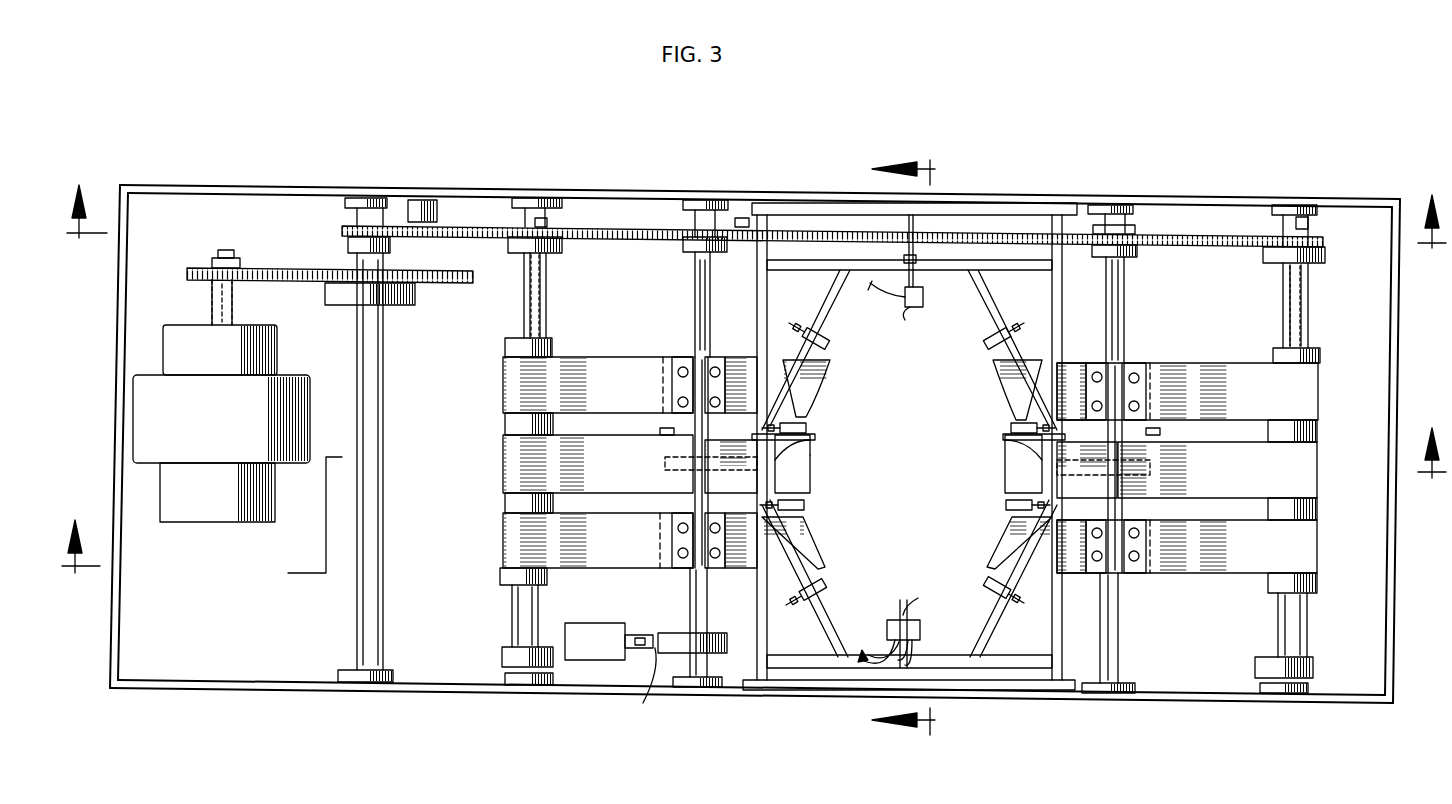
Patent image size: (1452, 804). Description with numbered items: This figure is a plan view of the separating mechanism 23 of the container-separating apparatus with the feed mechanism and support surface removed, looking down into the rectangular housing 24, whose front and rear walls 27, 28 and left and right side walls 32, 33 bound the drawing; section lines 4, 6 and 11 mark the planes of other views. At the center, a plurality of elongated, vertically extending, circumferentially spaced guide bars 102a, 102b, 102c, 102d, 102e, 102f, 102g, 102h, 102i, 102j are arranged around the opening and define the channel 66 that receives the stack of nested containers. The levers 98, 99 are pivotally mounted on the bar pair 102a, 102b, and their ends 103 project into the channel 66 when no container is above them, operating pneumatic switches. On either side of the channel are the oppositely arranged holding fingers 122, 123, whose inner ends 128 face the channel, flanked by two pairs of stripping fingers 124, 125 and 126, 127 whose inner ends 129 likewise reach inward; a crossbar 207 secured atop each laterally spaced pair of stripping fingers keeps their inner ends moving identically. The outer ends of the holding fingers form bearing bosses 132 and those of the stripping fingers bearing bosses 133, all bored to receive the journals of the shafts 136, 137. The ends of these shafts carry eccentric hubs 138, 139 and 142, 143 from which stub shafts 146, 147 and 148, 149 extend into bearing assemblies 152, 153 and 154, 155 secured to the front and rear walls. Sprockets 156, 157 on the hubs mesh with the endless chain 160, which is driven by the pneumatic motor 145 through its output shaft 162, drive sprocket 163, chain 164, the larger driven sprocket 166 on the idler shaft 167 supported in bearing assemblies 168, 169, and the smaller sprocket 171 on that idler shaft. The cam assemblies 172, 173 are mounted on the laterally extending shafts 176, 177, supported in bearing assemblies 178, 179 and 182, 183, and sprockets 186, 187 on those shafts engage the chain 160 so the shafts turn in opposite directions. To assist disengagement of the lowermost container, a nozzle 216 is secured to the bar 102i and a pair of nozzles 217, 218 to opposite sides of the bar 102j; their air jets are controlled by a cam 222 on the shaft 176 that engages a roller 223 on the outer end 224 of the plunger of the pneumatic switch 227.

The section line 4- 4 is at (754, 488).
The section line 6- 6 is at (756, 203).
The section line 11- 11 is at (915, 449).
The separating mechanism 23 is at (1072, 332).
The housing 24 is at (1232, 198).
The front wall 27 is at (620, 695).
The rear wall 28 is at (625, 190).
The left side wall 32 is at (118, 330).
The right side wall 33 is at (1398, 312).
The channel 66 is at (900, 464).
The lever 98 is at (812, 460).
The lever 99 is at (1005, 458).
The guide bar 102a is at (814, 422).
The guide bar 102b is at (1002, 422).
The guide bar 102c is at (810, 506).
The guide bar 102d is at (1000, 506).
The guide bar 102e is at (838, 580).
The guide bar 102f is at (975, 580).
The guide bar 102g is at (838, 355).
The guide bar 102h is at (975, 355).
The guide bar 102i is at (903, 328).
The guide bar 102j is at (938, 600).
The lever end 103 is at (815, 437).
The holding finger 122 is at (582, 486).
The holding finger 123 is at (1222, 490).
The stripping finger 124 is at (600, 394).
The stripping finger 125 is at (1218, 404).
The stripping finger 126 is at (580, 547).
The stripping finger 127 is at (1212, 560).
The inner ends of holding fingers 128 is at (1000, 480).
The inner ends of stripping fingers 129 is at (990, 378).
The bearing boss 132 is at (503, 455).
The bearing boss 133 is at (503, 385).
The shaft 136 is at (547, 285).
The shaft 137 is at (1283, 296).
The eccentric hub 138 is at (562, 248).
The eccentric hub 139 is at (538, 645).
The eccentric hub 142 is at (1322, 258).
The eccentric hub 143 is at (1313, 663).
The pneumatic motor 145 is at (195, 525).
The stub shaft 146 is at (548, 222).
The stub shaft 147 is at (520, 665).
The stub shaft 148 is at (1309, 225).
The stub shaft 149 is at (1275, 672).
The bearing assembly 152 is at (527, 198).
The bearing assembly 153 is at (526, 690).
The bearing assembly 154 is at (1305, 205).
The bearing assembly 155 is at (1288, 698).
The sprocket 156 is at (522, 228).
The sprocket 157 is at (1283, 238).
The endless chain 160 is at (838, 225).
The output shaft 162 is at (234, 290).
The drive sprocket 163 is at (205, 258).
The chain 164 is at (296, 268).
The driven sprocket 166 is at (465, 283).
The idler shaft 167 is at (384, 375).
The bearing assembly 168 is at (352, 198).
The bearing assembly 169 is at (362, 690).
The sprocket 171 is at (343, 228).
The cam assembly 172 is at (660, 432).
The cam assembly 173 is at (1160, 432).
The shaft 176 is at (695, 290).
The shaft 177 is at (1125, 328).
The bearing assembly 178 is at (706, 200).
The bearing assembly 179 is at (710, 690).
The bearing assembly 182 is at (1108, 205).
The bearing assembly 183 is at (1112, 698).
The sprocket 186 is at (705, 225).
The sprocket 187 is at (1140, 255).
The crossbar 207 is at (690, 438).
The nozzle 216 is at (923, 302).
The nozzle 217 is at (921, 630).
The nozzle 218 is at (888, 628).
The cam 222 is at (672, 633).
The roller 223 is at (660, 690).
The outer end of plunger 224 is at (640, 634).
The pneumatic switch 227 is at (588, 651).